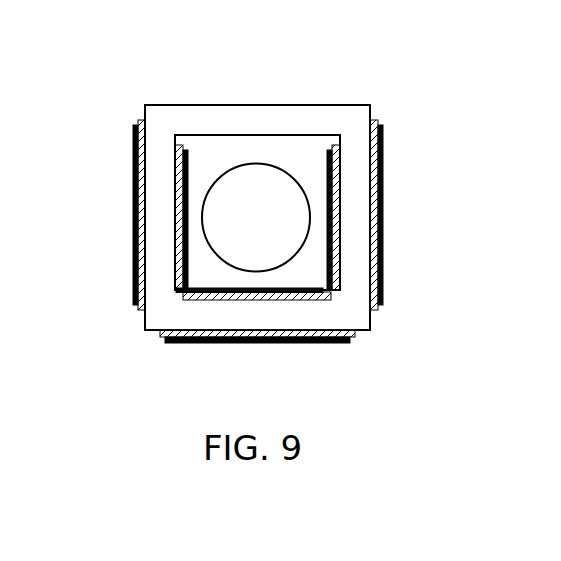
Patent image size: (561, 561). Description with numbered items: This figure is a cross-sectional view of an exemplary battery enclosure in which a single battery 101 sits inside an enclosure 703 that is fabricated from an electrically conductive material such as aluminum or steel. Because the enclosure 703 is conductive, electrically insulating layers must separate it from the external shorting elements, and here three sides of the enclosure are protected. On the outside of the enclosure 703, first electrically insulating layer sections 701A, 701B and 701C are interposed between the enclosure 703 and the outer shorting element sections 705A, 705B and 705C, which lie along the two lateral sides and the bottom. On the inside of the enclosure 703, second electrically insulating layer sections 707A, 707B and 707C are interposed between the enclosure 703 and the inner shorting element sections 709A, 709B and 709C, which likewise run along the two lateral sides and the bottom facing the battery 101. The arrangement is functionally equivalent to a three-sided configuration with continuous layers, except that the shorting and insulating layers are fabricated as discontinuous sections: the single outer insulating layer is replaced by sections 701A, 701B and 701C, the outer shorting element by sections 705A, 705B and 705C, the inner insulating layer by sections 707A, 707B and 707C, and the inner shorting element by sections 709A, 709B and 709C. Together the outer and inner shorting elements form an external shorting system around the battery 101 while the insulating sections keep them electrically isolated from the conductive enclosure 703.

The battery 101 is at (276, 228).
The enclosure 703 is at (253, 114).
The first electrically insulating layer section 701A is at (141, 120).
The first electrically insulating layer section 701B is at (358, 333).
The first electrically insulating layer section 701C is at (374, 120).
The outer shorting element section 705A is at (136, 128).
The outer shorting element section 705B is at (198, 343).
The outer shorting element section 705C is at (380, 128).
The second electrically insulating layer section 707A is at (178, 145).
The second electrically insulating layer section 707B is at (183, 297).
The second electrically insulating layer section 707C is at (337, 145).
The inner shorting element section 709A is at (185, 148).
The inner shorting element section 709B is at (195, 289).
The inner shorting element section 709C is at (330, 148).